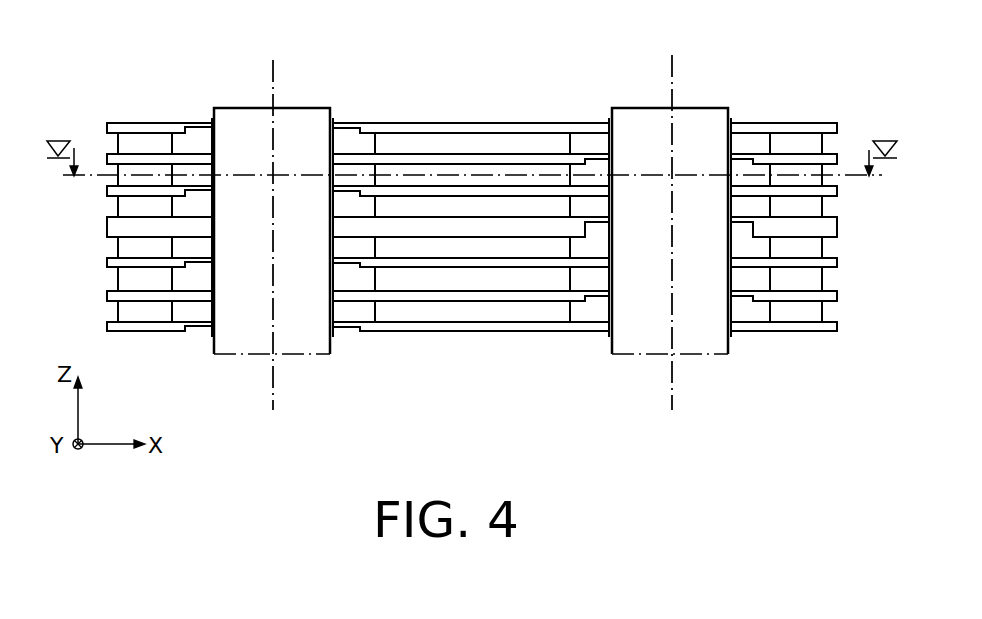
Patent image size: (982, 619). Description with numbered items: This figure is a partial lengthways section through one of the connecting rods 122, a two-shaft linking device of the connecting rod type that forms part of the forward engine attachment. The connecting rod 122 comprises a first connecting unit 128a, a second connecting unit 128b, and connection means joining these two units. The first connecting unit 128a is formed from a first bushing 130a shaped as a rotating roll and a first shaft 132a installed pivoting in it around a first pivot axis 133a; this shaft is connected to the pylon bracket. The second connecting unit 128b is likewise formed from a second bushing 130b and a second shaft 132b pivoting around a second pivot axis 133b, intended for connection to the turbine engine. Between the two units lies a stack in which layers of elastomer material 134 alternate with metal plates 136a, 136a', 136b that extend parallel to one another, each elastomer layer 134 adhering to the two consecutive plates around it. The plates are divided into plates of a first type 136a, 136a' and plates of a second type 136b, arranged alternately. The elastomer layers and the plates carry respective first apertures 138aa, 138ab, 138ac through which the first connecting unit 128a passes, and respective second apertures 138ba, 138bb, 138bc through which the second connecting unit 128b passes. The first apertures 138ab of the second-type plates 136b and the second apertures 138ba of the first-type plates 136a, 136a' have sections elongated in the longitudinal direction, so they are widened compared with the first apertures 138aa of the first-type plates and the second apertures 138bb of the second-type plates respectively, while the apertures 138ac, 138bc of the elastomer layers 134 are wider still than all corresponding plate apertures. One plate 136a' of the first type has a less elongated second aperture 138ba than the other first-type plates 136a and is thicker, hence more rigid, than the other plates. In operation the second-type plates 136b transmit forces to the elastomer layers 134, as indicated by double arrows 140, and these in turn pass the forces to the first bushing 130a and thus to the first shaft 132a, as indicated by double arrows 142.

The connecting rod 122 is at (805, 78).
The first connecting unit 128a is at (247, 356).
The second connecting unit 128b is at (645, 356).
The first bushing 130a is at (333, 335).
The second bushing 130b is at (728, 340).
The first shaft 132a is at (315, 350).
The second shaft 132b is at (713, 350).
The first pivot axis 133a is at (273, 398).
The second pivot axis 133b is at (672, 398).
The layer of elastomer material 134 is at (826, 310).
The plate of the first type 136a is at (432, 213).
The thicker plate of the first type 136a' is at (432, 232).
The plate of the second type 136b is at (107, 128).
The first aperture of plate of the first type 138aa is at (213, 233).
The first aperture of plate of the second type 138ab is at (185, 128).
The first aperture of elastomer layer 138ac is at (182, 333).
The second aperture of plate of the first type 138ba is at (588, 228).
The second aperture of plate of the second type 138bb is at (612, 338).
The second aperture of elastomer layer 138bc is at (760, 140).
The double arrows 140 is at (137, 142).
The double arrows 142 is at (347, 160).